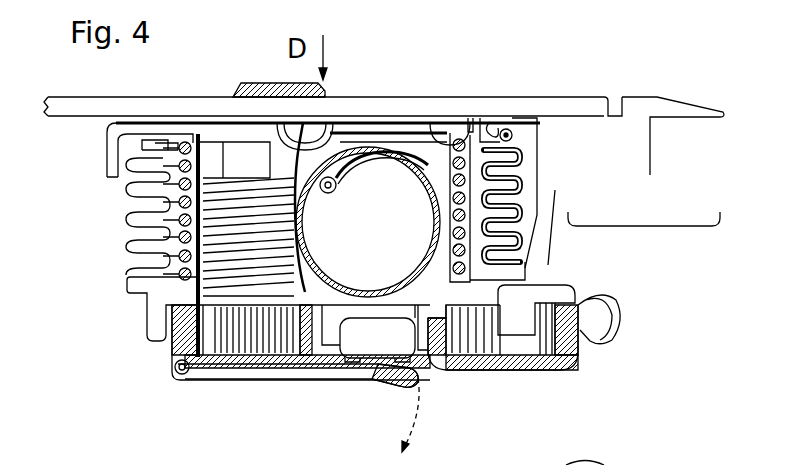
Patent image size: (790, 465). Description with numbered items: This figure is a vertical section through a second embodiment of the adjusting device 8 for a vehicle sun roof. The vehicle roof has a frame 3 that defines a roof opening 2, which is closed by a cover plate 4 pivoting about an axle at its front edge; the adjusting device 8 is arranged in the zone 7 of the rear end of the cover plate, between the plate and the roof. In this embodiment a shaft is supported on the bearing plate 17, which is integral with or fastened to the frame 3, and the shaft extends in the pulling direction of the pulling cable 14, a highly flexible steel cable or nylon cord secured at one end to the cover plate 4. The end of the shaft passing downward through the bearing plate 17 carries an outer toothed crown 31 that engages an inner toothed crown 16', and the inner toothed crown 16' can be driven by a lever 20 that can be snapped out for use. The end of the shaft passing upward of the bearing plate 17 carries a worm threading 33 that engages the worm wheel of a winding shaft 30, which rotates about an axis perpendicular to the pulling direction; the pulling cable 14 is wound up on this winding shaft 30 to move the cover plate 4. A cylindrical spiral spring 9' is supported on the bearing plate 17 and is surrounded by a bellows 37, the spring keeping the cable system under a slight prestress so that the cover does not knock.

The roof opening 2 is at (68, 137).
The frame 3 is at (641, 106).
The cover plate 4 is at (487, 97).
The zone of the rear end of the cover plate 7 is at (400, 97).
The adjusting device 8 is at (92, 311).
The cylindrical spiral spring 9' is at (373, 222).
The pulling cable 14 is at (357, 142).
The inner toothed crown 16' is at (330, 275).
The bearing plate 17 is at (517, 297).
The lever 20 is at (366, 387).
The winding shaft 30 is at (372, 300).
The outer toothed crown 31 is at (168, 336).
The worm threading 33 is at (213, 215).
The bellows 37 is at (515, 205).